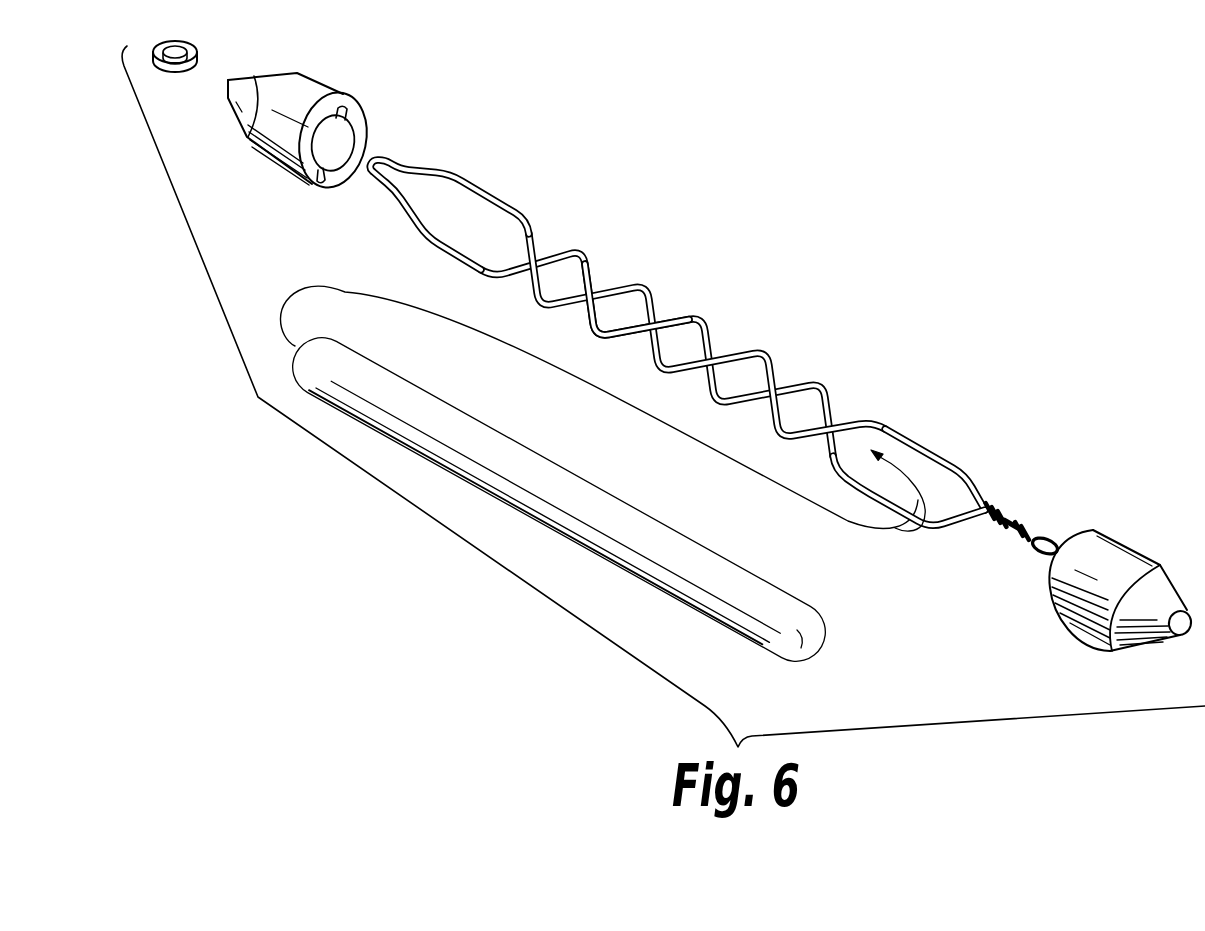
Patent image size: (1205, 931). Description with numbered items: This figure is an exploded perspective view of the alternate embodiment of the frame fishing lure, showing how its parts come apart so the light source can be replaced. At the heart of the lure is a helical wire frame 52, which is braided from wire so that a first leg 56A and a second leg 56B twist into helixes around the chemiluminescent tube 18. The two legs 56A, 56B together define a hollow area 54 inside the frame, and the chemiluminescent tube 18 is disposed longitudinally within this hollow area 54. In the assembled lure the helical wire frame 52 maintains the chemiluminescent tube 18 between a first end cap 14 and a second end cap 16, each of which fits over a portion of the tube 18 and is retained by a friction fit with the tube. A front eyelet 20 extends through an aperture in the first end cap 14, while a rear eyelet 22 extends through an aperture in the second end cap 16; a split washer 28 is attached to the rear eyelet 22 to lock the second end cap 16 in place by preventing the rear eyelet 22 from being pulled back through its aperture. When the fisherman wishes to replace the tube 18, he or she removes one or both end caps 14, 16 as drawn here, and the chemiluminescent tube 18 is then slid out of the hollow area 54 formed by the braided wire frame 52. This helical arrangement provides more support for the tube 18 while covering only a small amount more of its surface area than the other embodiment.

The first end cap 14 is at (1138, 529).
The second end cap 16 is at (309, 97).
The chemiluminescent tube 18 is at (687, 568).
The front eyelet 20 is at (1053, 536).
The rear eyelet 22 is at (393, 158).
The split washer 28 is at (196, 44).
The helical wire frame 52 is at (599, 342).
The hollow area 54 is at (683, 343).
The first leg 56A is at (926, 441).
The second leg 56B is at (897, 510).